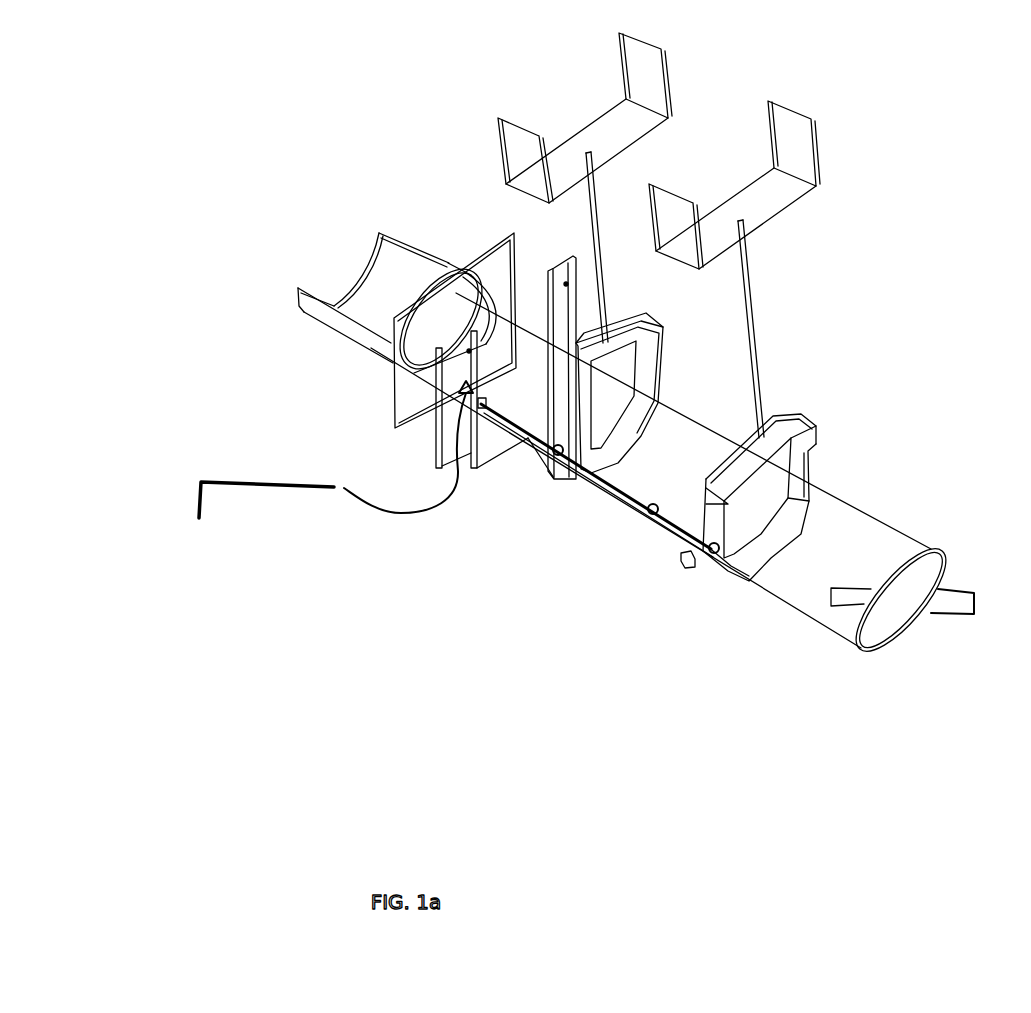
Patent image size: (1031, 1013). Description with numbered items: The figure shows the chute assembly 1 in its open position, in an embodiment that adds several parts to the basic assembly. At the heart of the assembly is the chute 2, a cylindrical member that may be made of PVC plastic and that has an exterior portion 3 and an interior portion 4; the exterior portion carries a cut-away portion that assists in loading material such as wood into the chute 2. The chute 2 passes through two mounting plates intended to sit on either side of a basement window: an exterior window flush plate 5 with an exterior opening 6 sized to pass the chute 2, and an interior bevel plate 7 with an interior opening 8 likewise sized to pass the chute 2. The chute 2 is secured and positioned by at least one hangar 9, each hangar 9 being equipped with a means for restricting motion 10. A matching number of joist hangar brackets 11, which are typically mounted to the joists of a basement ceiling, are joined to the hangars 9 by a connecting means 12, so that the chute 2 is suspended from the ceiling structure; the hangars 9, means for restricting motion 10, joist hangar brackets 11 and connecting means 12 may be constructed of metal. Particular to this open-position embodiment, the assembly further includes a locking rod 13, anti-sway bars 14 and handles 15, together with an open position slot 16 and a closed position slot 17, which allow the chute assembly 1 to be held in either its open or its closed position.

The chute assembly 1 is at (304, 672).
The chute 2 is at (401, 574).
The exterior portion 3 is at (340, 328).
The interior portion 4 is at (875, 507).
The exterior window flush plate 5 is at (393, 412).
The exterior opening 6 is at (450, 305).
The interior bevel plate 7 is at (447, 450).
The interior opening 8 is at (523, 372).
The hangar 9 is at (815, 452).
The means for restricting motion 10 is at (687, 567).
The joist hangar bracket 11 is at (815, 148).
The connecting means 12 is at (757, 334).
The locking rod 13 is at (180, 500).
The anti-sway bars 14 is at (627, 497).
The handles 15 is at (952, 613).
The open position slot 16 is at (715, 552).
The closed position slot 17 is at (650, 513).